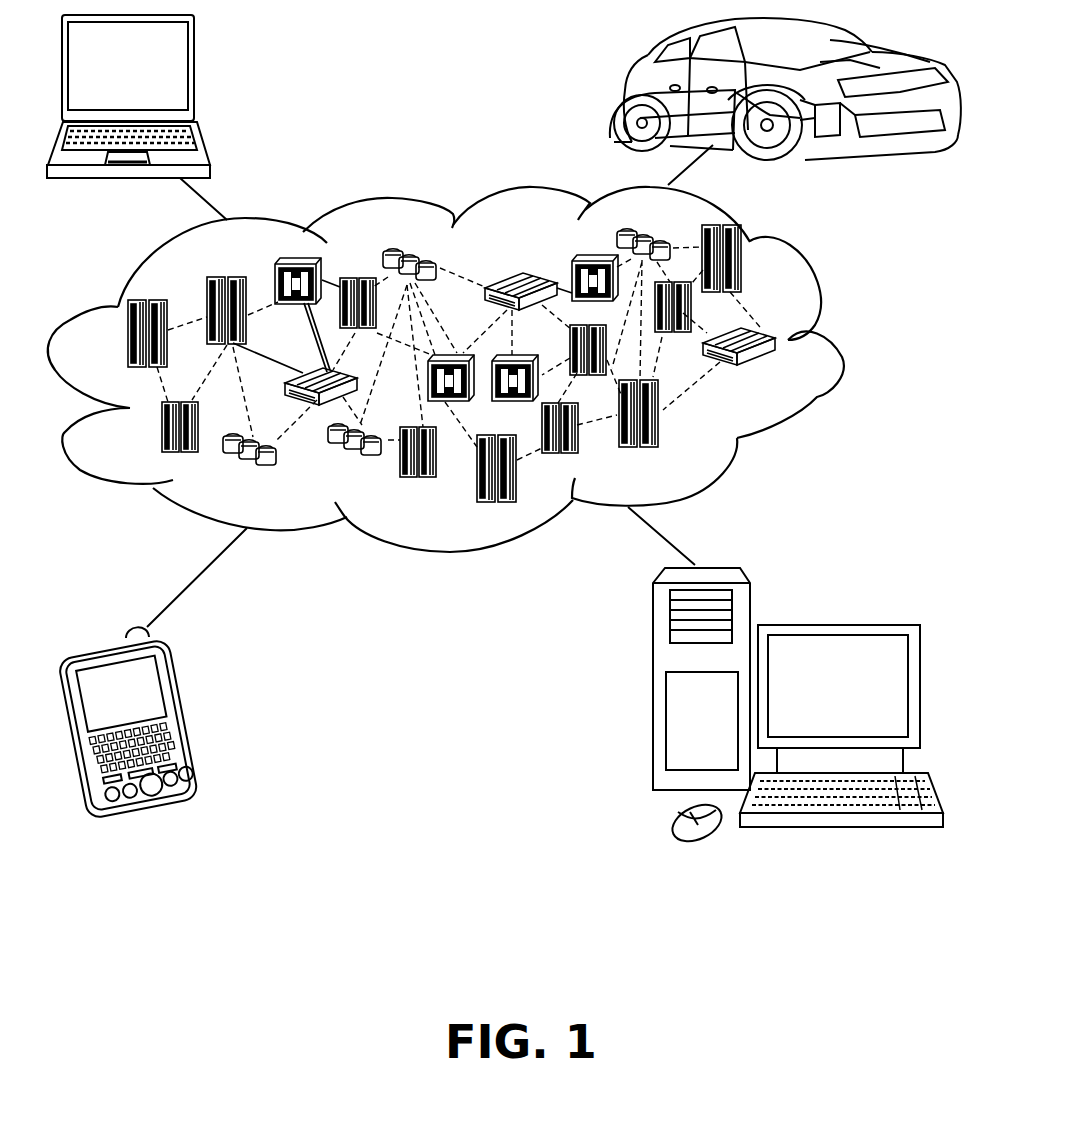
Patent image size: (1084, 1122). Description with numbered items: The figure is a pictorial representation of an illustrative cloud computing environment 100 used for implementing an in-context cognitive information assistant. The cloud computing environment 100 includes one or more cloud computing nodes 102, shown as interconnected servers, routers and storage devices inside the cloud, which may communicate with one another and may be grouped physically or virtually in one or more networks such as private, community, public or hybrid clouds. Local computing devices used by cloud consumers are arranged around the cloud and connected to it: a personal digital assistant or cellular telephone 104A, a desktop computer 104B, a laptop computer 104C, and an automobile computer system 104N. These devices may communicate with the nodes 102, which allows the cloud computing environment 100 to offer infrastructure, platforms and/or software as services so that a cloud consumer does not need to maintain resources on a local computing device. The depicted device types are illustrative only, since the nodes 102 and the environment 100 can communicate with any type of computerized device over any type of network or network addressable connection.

The cloud computing environment 100 is at (838, 348).
The cloud computing nodes 102 is at (782, 371).
The personal digital assistant or cellular telephone 104A is at (186, 713).
The desktop computer 104B is at (836, 625).
The laptop computer 104C is at (197, 77).
The automobile computer system 104N is at (620, 92).